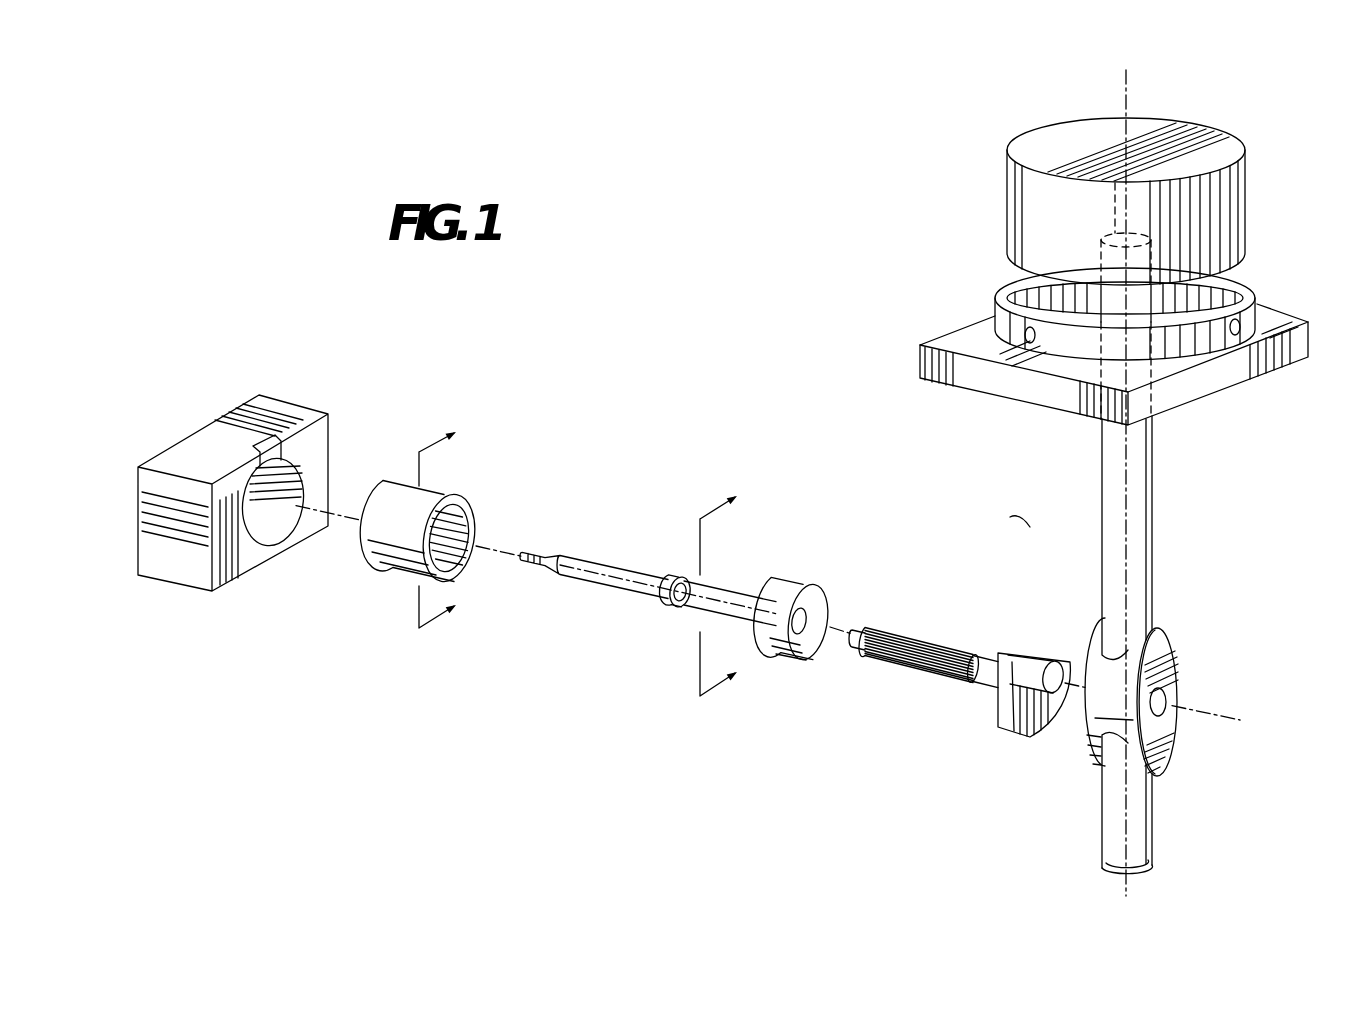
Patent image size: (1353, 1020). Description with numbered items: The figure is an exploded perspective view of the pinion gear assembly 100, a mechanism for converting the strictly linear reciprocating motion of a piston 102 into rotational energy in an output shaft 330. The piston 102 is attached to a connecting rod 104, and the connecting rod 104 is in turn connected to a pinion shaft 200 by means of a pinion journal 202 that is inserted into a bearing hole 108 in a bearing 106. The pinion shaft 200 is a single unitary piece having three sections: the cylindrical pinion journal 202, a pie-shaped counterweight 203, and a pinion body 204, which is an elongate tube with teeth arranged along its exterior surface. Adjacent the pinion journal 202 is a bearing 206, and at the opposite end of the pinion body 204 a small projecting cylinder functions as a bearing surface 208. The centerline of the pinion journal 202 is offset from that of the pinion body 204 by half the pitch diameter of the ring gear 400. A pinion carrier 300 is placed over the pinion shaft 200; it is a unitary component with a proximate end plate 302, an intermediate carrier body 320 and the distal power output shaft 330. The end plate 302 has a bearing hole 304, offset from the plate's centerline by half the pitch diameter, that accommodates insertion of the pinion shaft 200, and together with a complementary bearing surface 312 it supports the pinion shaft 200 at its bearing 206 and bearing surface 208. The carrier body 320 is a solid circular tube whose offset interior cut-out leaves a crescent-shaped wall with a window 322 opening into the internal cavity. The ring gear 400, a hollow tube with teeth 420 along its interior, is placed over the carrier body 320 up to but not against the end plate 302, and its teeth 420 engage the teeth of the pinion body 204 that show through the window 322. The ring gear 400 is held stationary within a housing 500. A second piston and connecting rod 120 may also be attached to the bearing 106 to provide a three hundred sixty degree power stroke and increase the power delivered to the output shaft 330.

The pinion gear assembly 100 is at (683, 738).
The piston 102 is at (1020, 175).
The connecting rod 104 is at (1139, 477).
The bearing 106 is at (1163, 650).
The bearing hole 108 is at (1171, 700).
The second piston and connecting rod 120 is at (1147, 822).
The pinion shaft 200 is at (990, 594).
The pinion journal 202 is at (1028, 668).
The counterweight 203 is at (1037, 731).
The pinion body 204 is at (935, 645).
The bearing 206 is at (984, 674).
The bearing surface 208 is at (858, 632).
The pinion carrier 300 is at (689, 500).
The end plate 302 is at (805, 592).
The bearing hole 304 is at (799, 635).
The bearing surface 312 is at (677, 611).
The carrier body 320 is at (687, 572).
The window 322 is at (724, 602).
The output shaft 330 is at (572, 565).
The ring gear 400 is at (371, 486).
The teeth 420 is at (466, 528).
The housing 500 is at (157, 442).